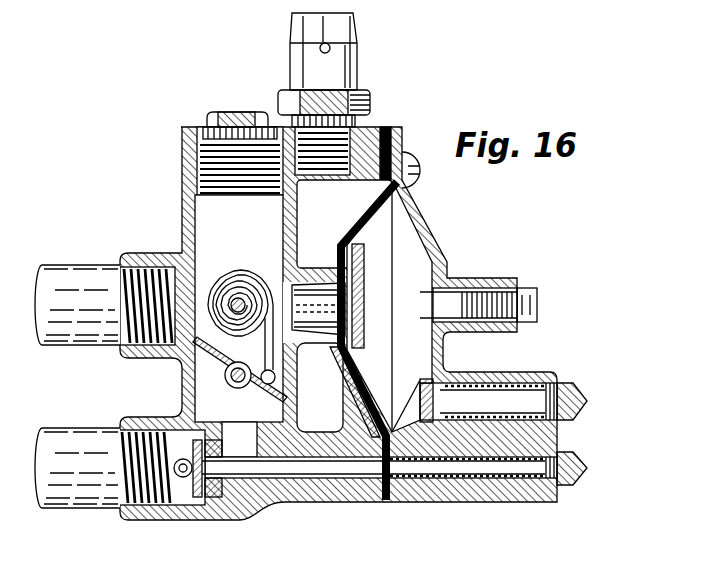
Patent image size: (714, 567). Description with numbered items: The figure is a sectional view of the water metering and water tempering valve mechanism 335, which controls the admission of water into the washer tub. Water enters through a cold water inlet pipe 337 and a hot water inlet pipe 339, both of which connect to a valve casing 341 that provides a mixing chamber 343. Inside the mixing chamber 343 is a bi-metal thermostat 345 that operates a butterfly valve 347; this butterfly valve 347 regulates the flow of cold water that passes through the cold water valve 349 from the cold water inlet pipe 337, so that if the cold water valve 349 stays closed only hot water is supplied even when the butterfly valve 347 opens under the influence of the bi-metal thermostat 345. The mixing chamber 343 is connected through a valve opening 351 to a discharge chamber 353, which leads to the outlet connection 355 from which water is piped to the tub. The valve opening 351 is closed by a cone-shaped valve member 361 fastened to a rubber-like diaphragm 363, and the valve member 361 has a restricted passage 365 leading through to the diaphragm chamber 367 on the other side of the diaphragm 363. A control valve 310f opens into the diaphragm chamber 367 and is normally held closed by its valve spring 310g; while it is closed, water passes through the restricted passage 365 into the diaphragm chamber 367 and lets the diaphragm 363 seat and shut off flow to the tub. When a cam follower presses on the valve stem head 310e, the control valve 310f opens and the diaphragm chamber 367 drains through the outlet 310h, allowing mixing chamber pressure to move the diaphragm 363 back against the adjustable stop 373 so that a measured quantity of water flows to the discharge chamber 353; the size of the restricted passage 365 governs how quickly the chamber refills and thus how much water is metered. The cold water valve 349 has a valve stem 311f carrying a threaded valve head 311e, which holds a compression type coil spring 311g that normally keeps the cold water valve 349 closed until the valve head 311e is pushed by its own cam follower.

The water metering valve mechanism 335 is at (186, 237).
The cold water inlet pipe 337 is at (80, 437).
The hot water inlet pipe 339 is at (80, 270).
The valve casing 341 is at (187, 403).
The mixing chamber 343 is at (256, 255).
The bi-metal thermostat 345 is at (231, 305).
The butterfly valve 347 is at (212, 362).
The cold water valve 349 is at (240, 468).
The valve opening 351 is at (322, 330).
The discharge chamber 353 is at (346, 202).
The outlet connection 355 is at (292, 68).
The cone-shaped valve member 361 is at (284, 280).
The diaphragm 363 is at (356, 240).
The restricted passage 365 is at (366, 280).
The diaphragm chamber 367 is at (428, 341).
The adjustable stop 373 is at (432, 292).
The valve stem head 310e is at (590, 402).
The control valve 310f is at (430, 392).
The valve spring 310g is at (528, 386).
The outlet 310h is at (465, 386).
The valve head 311e is at (590, 468).
The valve stem 311f is at (330, 470).
The compression type coil spring 311g is at (493, 494).